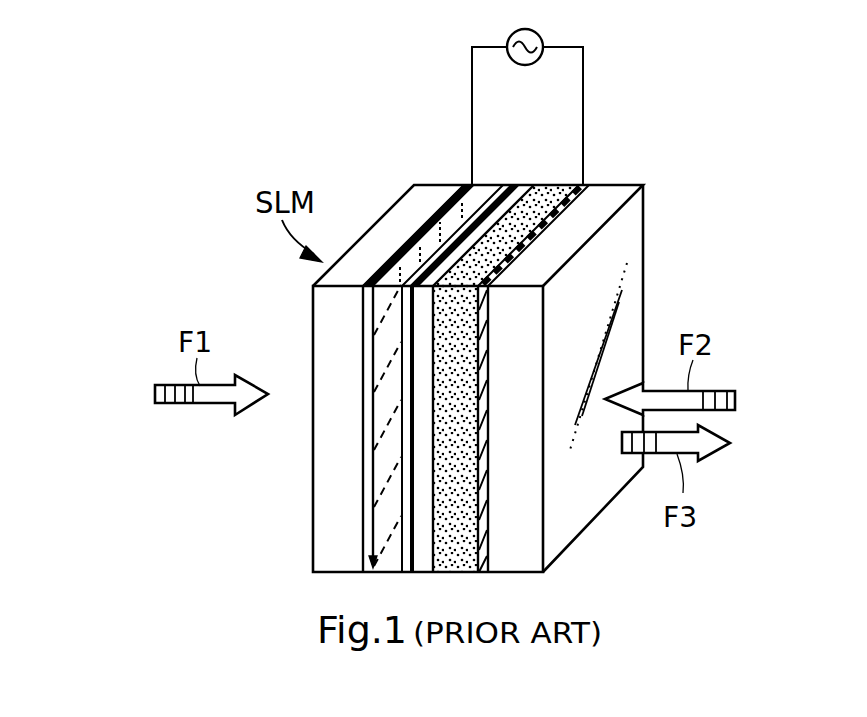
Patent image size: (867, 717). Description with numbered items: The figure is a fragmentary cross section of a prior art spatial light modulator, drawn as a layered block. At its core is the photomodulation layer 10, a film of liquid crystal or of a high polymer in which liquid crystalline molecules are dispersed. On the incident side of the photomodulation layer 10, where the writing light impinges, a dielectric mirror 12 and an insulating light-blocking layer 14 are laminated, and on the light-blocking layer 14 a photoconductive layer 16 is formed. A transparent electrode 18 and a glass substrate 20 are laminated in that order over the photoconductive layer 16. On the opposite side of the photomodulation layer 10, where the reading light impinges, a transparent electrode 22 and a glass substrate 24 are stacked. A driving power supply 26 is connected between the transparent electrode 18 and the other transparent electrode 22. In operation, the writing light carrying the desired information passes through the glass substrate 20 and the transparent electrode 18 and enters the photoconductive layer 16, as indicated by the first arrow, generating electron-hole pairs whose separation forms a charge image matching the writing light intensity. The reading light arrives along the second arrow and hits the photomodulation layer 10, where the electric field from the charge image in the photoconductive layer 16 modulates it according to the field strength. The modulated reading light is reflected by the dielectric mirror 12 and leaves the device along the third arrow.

The photomodulation layer 10 is at (555, 187).
The dielectric mirror 12 is at (527, 185).
The light-blocking layer 14 is at (508, 185).
The photoconductive layer 16 is at (488, 185).
The transparent electrode 18 is at (450, 198).
The glass substrate 20 is at (387, 221).
The transparent electrode 22 is at (575, 200).
The glass substrate 24 is at (638, 243).
The driving power supply 26 is at (545, 36).